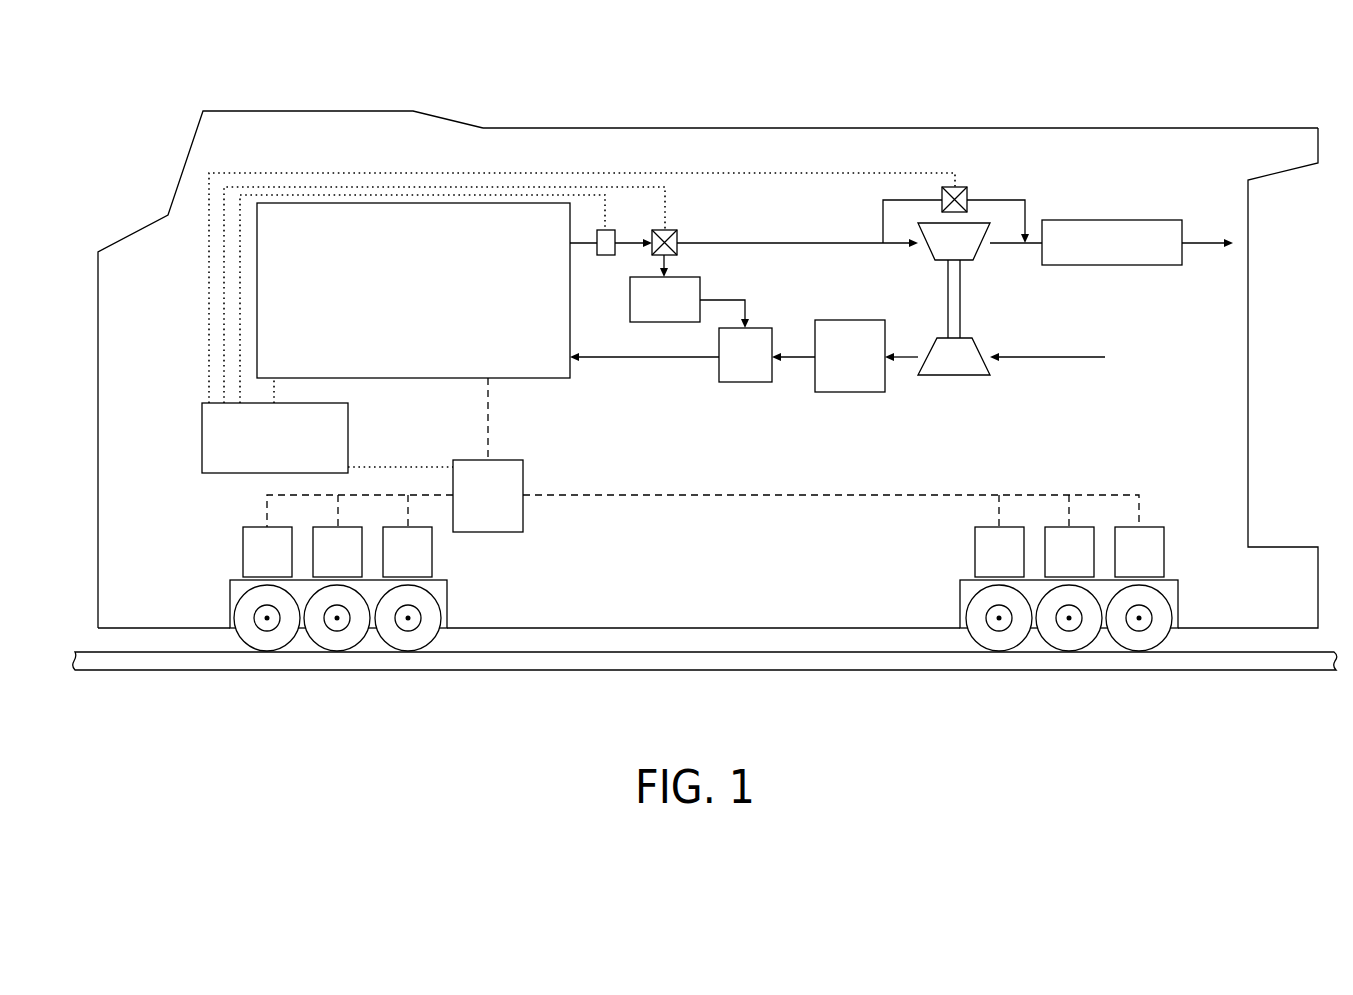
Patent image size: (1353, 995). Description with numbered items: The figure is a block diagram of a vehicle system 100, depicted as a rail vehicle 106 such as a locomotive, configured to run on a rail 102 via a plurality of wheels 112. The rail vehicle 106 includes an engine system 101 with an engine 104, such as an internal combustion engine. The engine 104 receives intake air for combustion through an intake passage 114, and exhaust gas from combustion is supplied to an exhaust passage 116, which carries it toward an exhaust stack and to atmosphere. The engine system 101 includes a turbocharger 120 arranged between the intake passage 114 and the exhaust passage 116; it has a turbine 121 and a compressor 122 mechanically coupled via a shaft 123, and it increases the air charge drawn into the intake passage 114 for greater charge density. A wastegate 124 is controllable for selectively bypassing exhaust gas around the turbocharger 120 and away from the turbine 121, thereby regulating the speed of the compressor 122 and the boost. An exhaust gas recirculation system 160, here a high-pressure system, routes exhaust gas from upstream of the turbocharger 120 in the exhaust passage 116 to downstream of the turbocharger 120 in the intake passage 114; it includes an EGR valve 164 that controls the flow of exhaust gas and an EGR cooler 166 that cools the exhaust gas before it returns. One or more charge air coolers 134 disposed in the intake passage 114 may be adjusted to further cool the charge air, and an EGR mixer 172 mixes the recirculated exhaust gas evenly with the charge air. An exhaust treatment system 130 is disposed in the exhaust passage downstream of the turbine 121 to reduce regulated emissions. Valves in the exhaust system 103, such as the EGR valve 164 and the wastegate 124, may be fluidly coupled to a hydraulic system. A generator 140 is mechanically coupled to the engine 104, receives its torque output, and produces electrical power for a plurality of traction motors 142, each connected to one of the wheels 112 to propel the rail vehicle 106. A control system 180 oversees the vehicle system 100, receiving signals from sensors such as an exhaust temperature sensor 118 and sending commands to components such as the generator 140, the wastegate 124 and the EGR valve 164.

The vehicle system 100 is at (1151, 70).
The engine system 101 is at (368, 169).
The rail 102 is at (1247, 670).
The exhaust system 103 is at (805, 424).
The engine 104 is at (428, 313).
The rail vehicle 106 is at (998, 128).
The wheels 112 is at (433, 610).
The intake passage 114 is at (1038, 357).
The exhaust passage 116 is at (782, 243).
The exhaust temperature sensor 118 is at (608, 257).
The turbocharger 120 is at (1000, 299).
The turbine 121 is at (969, 254).
The compressor 122 is at (969, 368).
The shaft 123 is at (1006, 289).
The wastegate 124 is at (968, 186).
The exhaust treatment system 130 is at (1127, 253).
The charge air cooler 134 is at (865, 367).
The generator 140 is at (503, 506).
The traction motors 142 is at (1154, 563).
The exhaust gas recirculation (EGR) system 160 is at (701, 261).
The EGR valve 164 is at (672, 230).
The EGR cooler 166 is at (680, 310).
The EGR mixer 172 is at (760, 367).
The control system 180 is at (333, 463).